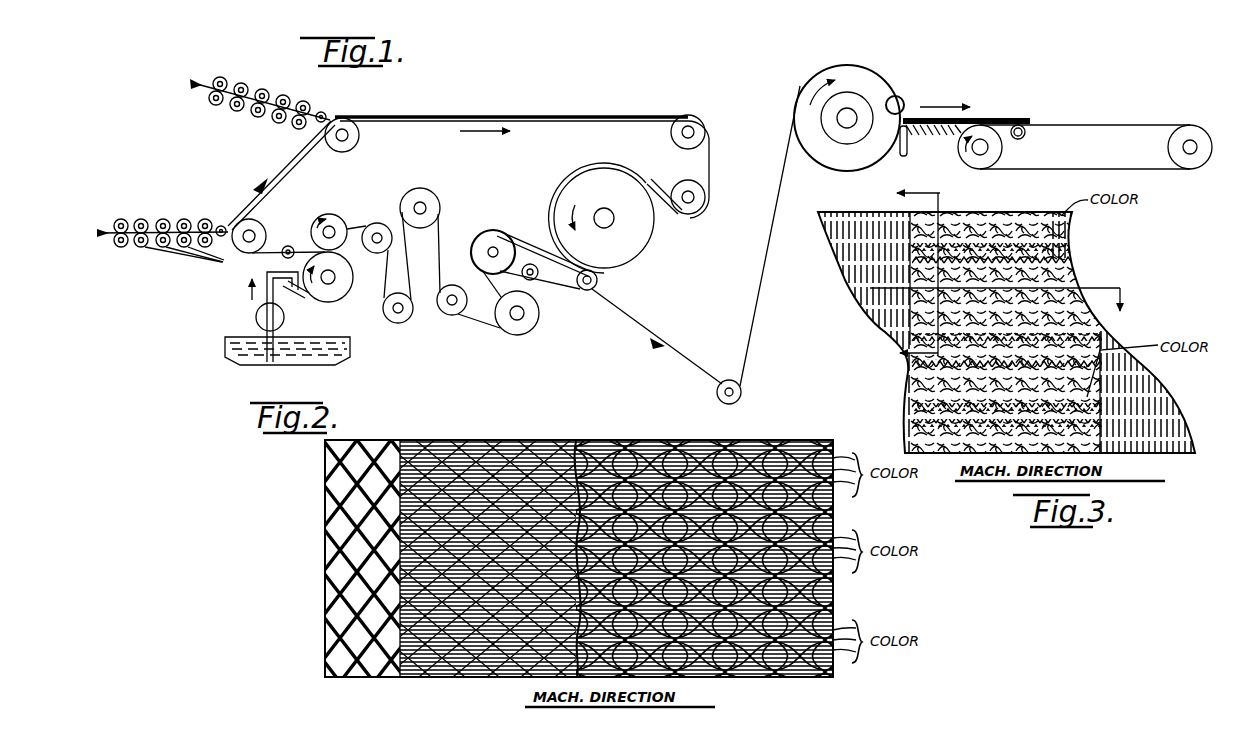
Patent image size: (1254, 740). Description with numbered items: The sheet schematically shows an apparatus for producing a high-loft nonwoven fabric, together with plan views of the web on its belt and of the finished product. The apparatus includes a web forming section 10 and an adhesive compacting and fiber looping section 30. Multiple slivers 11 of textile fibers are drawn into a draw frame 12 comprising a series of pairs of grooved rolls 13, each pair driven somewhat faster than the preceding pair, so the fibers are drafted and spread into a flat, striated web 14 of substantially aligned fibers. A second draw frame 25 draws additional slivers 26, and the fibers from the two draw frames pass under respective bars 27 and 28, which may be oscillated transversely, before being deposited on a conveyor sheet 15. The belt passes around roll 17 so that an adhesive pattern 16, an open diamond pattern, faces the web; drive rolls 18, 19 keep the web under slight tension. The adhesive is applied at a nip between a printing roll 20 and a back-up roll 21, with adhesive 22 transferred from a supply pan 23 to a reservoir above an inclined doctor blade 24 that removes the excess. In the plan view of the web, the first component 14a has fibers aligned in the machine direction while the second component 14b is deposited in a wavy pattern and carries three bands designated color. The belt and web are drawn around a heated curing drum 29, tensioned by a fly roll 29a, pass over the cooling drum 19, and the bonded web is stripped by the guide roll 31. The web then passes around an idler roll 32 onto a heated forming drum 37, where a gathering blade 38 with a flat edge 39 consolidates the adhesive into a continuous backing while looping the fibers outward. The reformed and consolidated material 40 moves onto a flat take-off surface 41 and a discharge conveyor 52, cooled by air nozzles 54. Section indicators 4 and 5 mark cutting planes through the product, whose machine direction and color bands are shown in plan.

In FIG. 1, the web forming section 10 is at (493, 88).
In FIG. 1, the slivers 11 is at (121, 247).
In FIG. 1, the draw frame 12 is at (145, 220).
In FIG. 1, the grooved rolls 13 is at (142, 249).
In FIG. 1, the web 14 is at (281, 158).
In FIG. 2, the web 14 is at (523, 684).
In FIG. 3, the web 14 is at (840, 264).
In FIG. 1, the first component of the web 14a is at (224, 246).
In FIG. 2, the first component of the web 14a is at (488, 442).
In FIG. 1, the second component of the web 14b is at (345, 117).
In FIG. 2, the second component of the web 14b is at (698, 442).
In FIG. 1, the conveyor sheet 15 is at (274, 188).
In FIG. 2, the conveyor sheet 15 is at (340, 588).
In FIG. 1, the adhesive pattern 16 is at (259, 256).
In FIG. 2, the adhesive pattern 16 is at (326, 548).
In FIG. 3, the adhesive pattern 16 is at (856, 301).
In FIG. 1, the roll 17 is at (255, 222).
In FIG. 1, the drive roll 18 is at (522, 337).
In FIG. 1, the drive roll 19 is at (482, 233).
In FIG. 1, the printing roll 20 is at (349, 301).
In FIG. 1, the back-up roll 21 is at (346, 203).
In FIG. 1, the adhesive 22 is at (348, 358).
In FIG. 1, the supply pan 23 is at (240, 365).
In FIG. 1, the doctor blade 24 is at (298, 298).
In FIG. 1, the second draw frame 25 is at (245, 78).
In FIG. 1, the slivers 26 is at (196, 82).
In FIG. 1, the bar 27 is at (221, 226).
In FIG. 1, the bar 28 is at (321, 112).
In FIG. 1, the heated curing drum 29 is at (640, 246).
In FIG. 1, the fly roll 29a is at (598, 284).
In FIG. 1, the adhesive compacting and fiber looping section 30 is at (949, 82).
In FIG. 1, the guide roll 31 is at (538, 281).
In FIG. 1, the idler roll 32 is at (742, 390).
In FIG. 1, the heated forming drum 37 is at (858, 67).
In FIG. 1, the gathering blade 38 is at (903, 158).
In FIG. 1, the flat edge 39 is at (900, 97).
In FIG. 1, the reformed and consolidated material 40 is at (986, 114).
In FIG. 3, the reformed and consolidated material 40 is at (1086, 262).
In FIG. 1, the flat take-off surface 41 is at (948, 136).
In FIG. 1, the discharge conveyor 52 is at (985, 170).
In FIG. 1, the air nozzles 54 is at (1027, 137).
In FIG. 3, the section line 4- 4 is at (934, 274).
In FIG. 3, the section line 5- 5 is at (1002, 286).